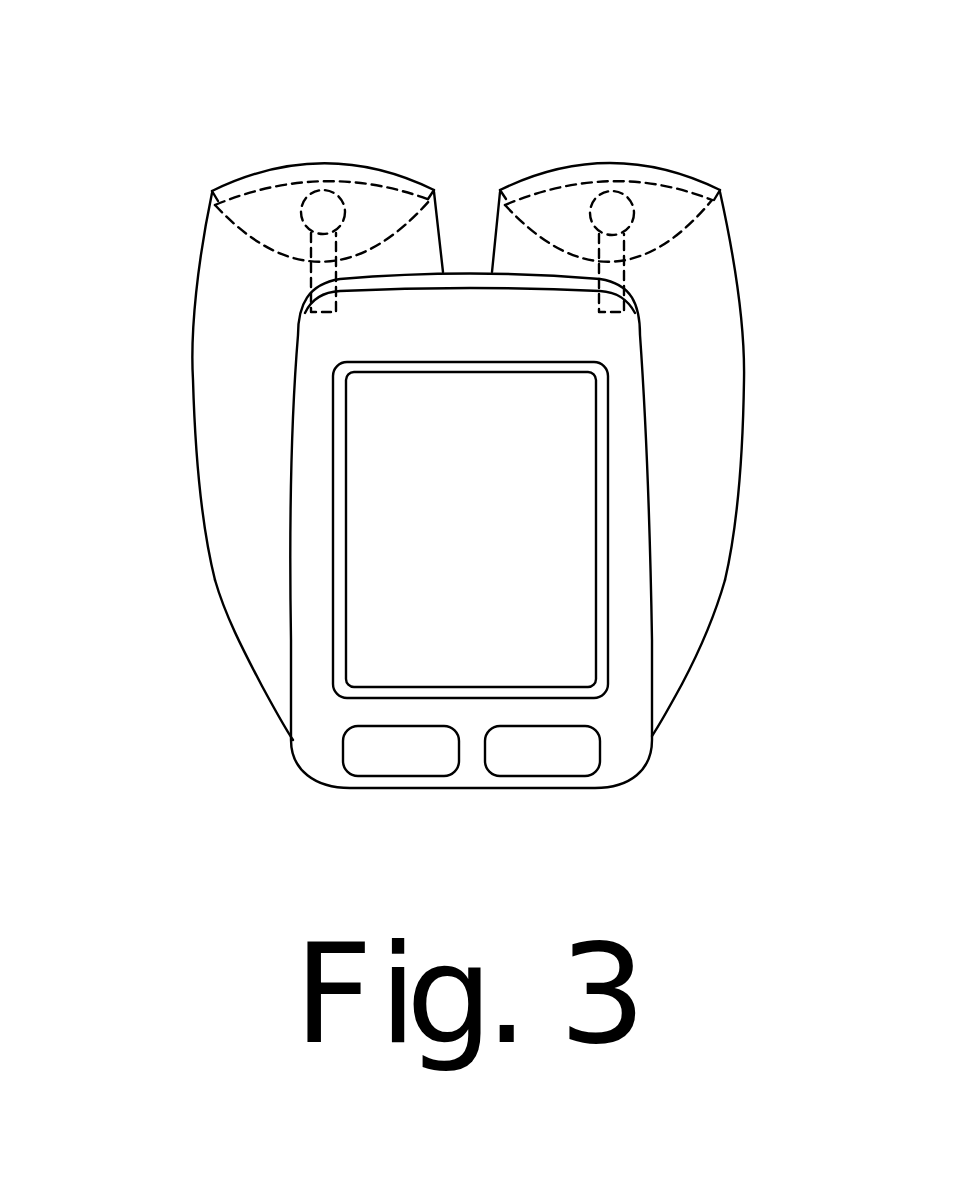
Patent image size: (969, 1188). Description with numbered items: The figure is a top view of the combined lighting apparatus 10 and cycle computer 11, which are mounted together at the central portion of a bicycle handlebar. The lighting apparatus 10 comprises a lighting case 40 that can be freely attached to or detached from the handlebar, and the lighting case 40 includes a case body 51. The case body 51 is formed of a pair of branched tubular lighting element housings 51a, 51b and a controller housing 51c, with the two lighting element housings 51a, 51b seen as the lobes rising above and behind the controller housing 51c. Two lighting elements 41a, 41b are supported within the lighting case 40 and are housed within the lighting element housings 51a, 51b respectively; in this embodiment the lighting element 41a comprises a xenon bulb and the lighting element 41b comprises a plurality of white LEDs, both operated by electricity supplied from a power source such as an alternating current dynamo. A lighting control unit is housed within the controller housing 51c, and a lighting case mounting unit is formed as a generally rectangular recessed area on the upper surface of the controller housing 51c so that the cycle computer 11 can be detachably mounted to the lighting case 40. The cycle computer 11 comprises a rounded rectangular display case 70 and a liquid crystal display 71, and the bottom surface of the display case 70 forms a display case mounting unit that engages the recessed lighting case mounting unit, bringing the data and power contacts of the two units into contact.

The lighting apparatus 10 is at (174, 288).
The cycle computer 11 is at (309, 556).
The lighting case 40 is at (198, 460).
The lighting element 41a is at (300, 202).
The lighting element 41b is at (591, 198).
The case body 51 is at (206, 238).
The lighting element housing 51a is at (236, 388).
The lighting element housing 51b is at (725, 353).
The controller housing 51c is at (668, 668).
The display case 70 is at (308, 645).
The liquid crystal display 71 is at (548, 570).